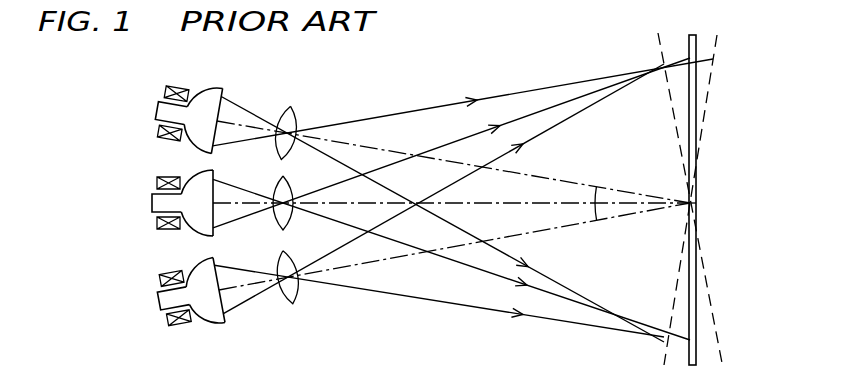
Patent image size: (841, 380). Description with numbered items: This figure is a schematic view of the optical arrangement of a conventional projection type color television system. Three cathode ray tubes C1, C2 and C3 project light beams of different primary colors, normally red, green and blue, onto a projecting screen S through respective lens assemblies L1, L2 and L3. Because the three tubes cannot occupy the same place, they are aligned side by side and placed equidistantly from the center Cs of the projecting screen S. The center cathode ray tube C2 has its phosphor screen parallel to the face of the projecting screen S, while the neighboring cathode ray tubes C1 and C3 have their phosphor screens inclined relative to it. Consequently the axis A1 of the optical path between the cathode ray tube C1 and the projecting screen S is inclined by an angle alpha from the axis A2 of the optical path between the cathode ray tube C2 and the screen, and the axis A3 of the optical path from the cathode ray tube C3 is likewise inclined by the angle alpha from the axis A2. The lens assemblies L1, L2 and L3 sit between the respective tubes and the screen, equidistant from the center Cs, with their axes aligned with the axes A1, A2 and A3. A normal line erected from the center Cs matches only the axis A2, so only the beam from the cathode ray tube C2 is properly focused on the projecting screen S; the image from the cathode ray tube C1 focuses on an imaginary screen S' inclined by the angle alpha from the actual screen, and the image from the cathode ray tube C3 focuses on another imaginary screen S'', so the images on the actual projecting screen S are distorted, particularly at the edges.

The cathode ray tube C1 is at (163, 112).
The cathode ray tube C2 is at (152, 208).
The cathode ray tube C3 is at (163, 302).
The lens assembly L1 is at (297, 115).
The lens assembly L2 is at (285, 195).
The lens assembly L3 is at (288, 268).
The axis of the optical path A1 is at (553, 175).
The axis of the optical path A2 is at (530, 202).
The axis of the optical path A3 is at (535, 226).
The projecting screen S is at (724, 200).
The center of the projecting screen Cs is at (691, 203).
The imaginary screen S' is at (660, 203).
The imaginary screen S'' is at (713, 202).